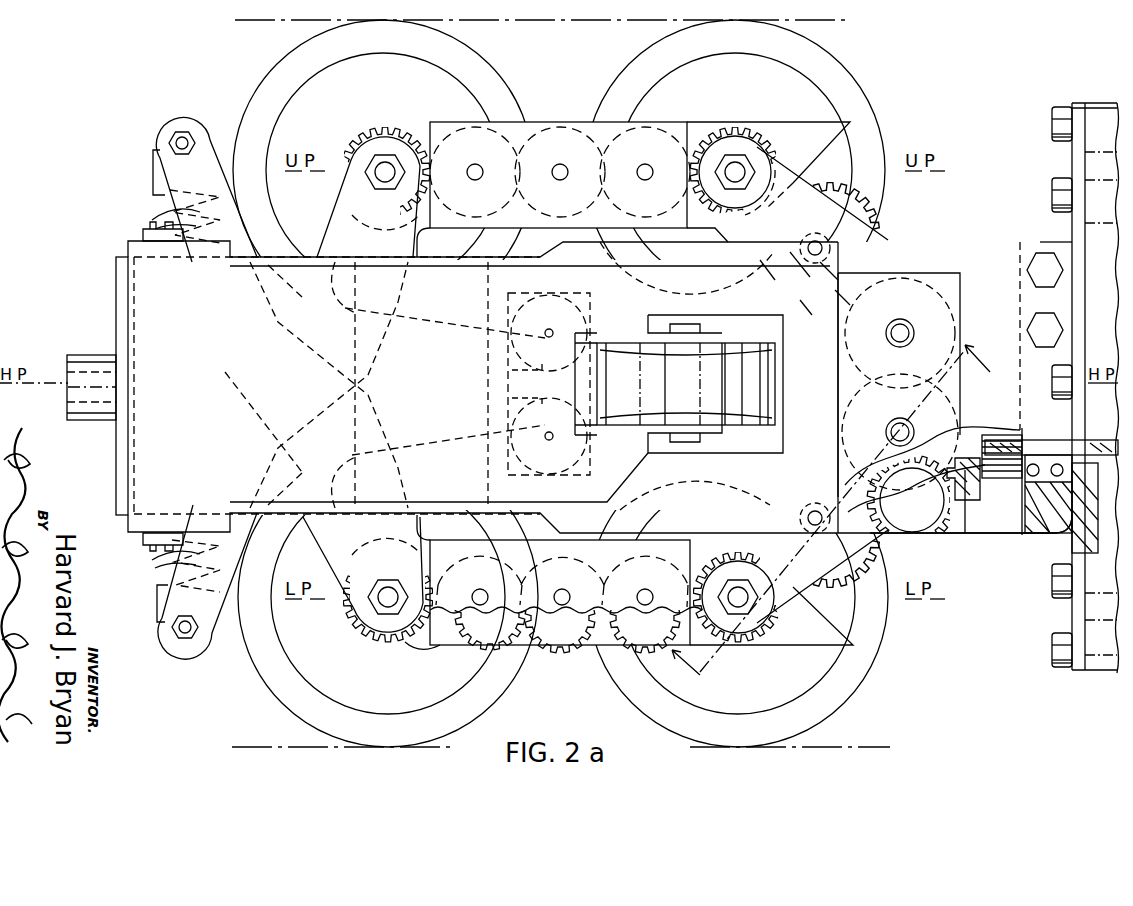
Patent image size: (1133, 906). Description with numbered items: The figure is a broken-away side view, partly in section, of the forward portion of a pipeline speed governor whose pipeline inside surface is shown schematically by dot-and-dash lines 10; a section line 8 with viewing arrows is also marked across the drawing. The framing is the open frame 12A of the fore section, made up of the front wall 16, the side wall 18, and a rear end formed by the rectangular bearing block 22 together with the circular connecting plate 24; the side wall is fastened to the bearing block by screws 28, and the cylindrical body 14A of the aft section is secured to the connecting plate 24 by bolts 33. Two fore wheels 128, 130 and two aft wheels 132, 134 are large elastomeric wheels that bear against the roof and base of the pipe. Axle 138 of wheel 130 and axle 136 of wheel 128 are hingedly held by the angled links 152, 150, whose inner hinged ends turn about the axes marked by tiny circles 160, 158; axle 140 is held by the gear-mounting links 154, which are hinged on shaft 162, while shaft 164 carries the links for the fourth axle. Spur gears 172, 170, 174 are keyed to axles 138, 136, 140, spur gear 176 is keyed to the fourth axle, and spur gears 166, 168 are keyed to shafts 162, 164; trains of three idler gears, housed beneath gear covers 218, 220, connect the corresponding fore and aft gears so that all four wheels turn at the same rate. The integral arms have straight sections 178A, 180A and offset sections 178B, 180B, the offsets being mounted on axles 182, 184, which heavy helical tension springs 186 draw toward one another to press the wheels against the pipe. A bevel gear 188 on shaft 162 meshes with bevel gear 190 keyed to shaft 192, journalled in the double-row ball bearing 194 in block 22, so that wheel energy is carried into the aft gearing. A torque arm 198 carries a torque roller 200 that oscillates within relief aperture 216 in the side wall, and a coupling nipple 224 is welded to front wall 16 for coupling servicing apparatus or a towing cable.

The pipeline inside surface 10 is at (568, 22).
The fore wheel 130 is at (270, 74).
The aft wheel 134 is at (850, 70).
The fore wheel 128 is at (273, 700).
The aft wheel 132 is at (860, 700).
The spur gear 172 is at (385, 128).
The spur gear 170 is at (406, 643).
The spur gear 176 is at (738, 126).
The spur gear 174 is at (772, 632).
The axle 138 is at (378, 165).
The axle 136 is at (383, 607).
The axle 140 is at (741, 608).
The angled links 152 is at (380, 250).
The angled links 150 is at (386, 547).
The straight arm section 178A is at (430, 125).
The offset arm section 178B is at (207, 593).
The axle 184 is at (168, 148).
The axle 182 is at (172, 628).
The offset arm section 180B is at (163, 192).
The helical tension spring 186 is at (162, 566).
The straight arm section 180A is at (478, 640).
The gear cover 218 is at (551, 122).
The gear cover 220 is at (565, 612).
The front wall 16 is at (116, 283).
The coupling nipple 224 is at (102, 356).
The torque arm 198 is at (178, 386).
The axis 160 is at (545, 334).
The axis 158 is at (545, 435).
The torque roller 200 is at (692, 398).
The relief aperture 216 is at (774, 448).
The side wall 18 is at (826, 390).
The open frame 12A is at (700, 277).
The spur gear 168 is at (930, 297).
The shaft 164 is at (900, 324).
The shaft 162 is at (900, 423).
The screws 28 is at (1022, 314).
The circular connecting plate 24 is at (1072, 240).
The cylindrical body 14A is at (1110, 268).
The bolts 33 is at (1052, 185).
The section line 8 is at (838, 523).
The shaft 192 is at (1047, 440).
The double-row ball bearing 194 is at (1020, 498).
The spur gear 166 is at (932, 486).
The bevel gear 188 is at (911, 545).
The bevel gear 190 is at (958, 513).
The rectangular bearing block 22 is at (1052, 538).
The gear-mounting links 154 is at (826, 572).